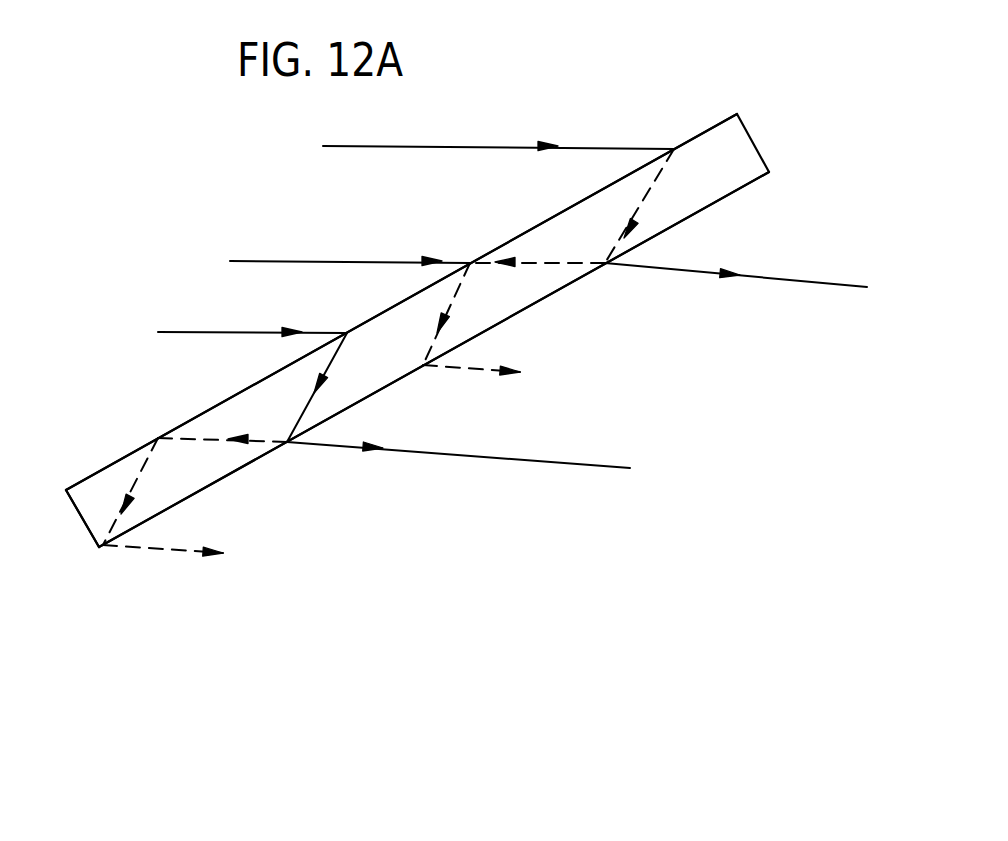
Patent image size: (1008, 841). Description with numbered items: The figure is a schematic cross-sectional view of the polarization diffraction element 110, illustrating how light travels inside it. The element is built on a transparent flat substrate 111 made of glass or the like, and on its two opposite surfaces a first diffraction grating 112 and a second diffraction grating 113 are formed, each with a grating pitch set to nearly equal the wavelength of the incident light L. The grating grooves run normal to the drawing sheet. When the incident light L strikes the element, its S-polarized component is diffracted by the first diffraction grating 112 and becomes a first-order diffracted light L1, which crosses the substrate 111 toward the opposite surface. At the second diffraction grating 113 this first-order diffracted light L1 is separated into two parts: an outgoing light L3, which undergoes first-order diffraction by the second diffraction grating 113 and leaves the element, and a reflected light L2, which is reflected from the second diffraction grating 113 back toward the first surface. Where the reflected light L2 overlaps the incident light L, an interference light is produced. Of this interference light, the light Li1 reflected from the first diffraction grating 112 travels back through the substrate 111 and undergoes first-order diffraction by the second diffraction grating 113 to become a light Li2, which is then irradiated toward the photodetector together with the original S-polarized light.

The polarization diffraction element 110 is at (776, 139).
The transparent flat substrate 111 is at (81, 520).
The first diffraction grating 112 is at (700, 138).
The second diffraction grating 113 is at (738, 192).
The incident light L is at (476, 146).
The first-order diffracted light L1 is at (645, 197).
The reflected light L2 is at (540, 261).
The outgoing light L3 is at (673, 272).
The light reflected from the first diffraction grating Li1 is at (452, 308).
The light diffracted from interference light Li2 is at (495, 376).